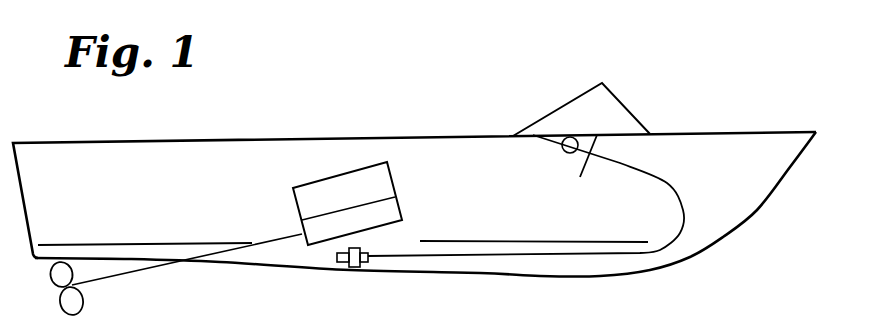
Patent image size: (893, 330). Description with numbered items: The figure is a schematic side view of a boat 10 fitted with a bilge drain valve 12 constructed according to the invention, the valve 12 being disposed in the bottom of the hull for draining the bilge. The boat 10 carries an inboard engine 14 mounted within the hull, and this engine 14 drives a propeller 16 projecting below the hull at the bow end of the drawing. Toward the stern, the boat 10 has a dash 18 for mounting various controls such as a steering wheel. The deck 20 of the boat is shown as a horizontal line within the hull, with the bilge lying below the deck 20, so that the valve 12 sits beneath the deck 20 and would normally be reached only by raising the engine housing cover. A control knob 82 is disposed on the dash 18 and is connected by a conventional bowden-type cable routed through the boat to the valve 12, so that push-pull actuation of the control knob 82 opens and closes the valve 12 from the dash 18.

The boat 10 is at (383, 127).
The valve 12 is at (380, 246).
The inboard engine 14 is at (317, 182).
The propeller 16 is at (83, 310).
The dash 18 is at (579, 174).
The deck 20 is at (530, 240).
The control knob 82 is at (537, 134).